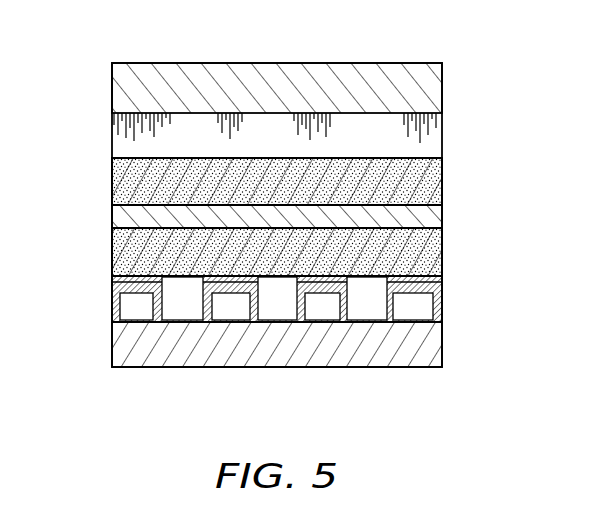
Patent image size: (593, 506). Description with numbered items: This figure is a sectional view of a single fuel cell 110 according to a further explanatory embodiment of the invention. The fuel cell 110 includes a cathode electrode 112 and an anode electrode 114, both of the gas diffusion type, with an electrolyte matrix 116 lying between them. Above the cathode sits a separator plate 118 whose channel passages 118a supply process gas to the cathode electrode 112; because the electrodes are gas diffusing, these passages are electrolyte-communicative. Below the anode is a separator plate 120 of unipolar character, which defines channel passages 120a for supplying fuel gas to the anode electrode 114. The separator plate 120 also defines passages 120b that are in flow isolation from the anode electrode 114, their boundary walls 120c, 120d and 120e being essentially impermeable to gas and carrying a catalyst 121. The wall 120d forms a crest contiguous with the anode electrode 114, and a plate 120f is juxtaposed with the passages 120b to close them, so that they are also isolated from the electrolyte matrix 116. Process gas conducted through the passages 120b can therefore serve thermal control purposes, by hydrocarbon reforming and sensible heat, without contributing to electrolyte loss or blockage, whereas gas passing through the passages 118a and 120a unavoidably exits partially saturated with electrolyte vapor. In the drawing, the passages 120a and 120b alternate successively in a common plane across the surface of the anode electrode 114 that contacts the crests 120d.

The fuel cell 110 is at (270, 203).
The cathode electrode 112 is at (338, 168).
The anode electrode 114 is at (435, 249).
The electrolyte matrix 116 is at (428, 218).
The separator plate 118 is at (387, 88).
The channel passages 118a is at (258, 112).
The separator plate 120 is at (276, 332).
The channel passages 120a is at (172, 307).
The passages 120b is at (333, 313).
The boundary wall 120c is at (300, 298).
The boundary wall 120d is at (322, 282).
The boundary wall 120e is at (400, 307).
The plate 120f is at (417, 357).
The catalyst 121 is at (322, 288).